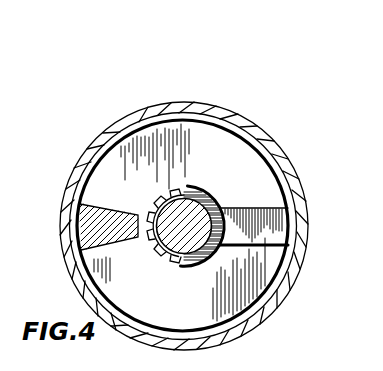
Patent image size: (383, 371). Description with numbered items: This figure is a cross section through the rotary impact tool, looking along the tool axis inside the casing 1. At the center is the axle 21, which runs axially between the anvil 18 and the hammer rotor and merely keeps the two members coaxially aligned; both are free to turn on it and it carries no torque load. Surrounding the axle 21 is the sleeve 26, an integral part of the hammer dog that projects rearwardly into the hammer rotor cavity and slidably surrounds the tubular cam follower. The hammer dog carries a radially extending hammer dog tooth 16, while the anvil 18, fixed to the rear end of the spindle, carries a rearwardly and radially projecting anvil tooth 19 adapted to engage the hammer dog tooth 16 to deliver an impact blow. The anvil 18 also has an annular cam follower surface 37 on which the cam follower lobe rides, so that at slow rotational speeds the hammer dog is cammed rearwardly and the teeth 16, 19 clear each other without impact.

The casing 1 is at (279, 297).
The hammer dog tooth 16 is at (78, 245).
The anvil 18 is at (149, 307).
The anvil tooth 19 is at (268, 243).
The axle 21 is at (184, 246).
The sleeve 26 is at (163, 191).
The annular cam follower surface 37 is at (232, 170).